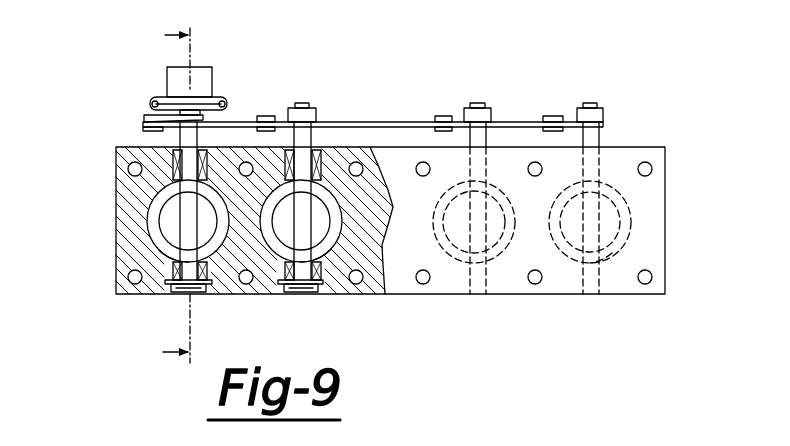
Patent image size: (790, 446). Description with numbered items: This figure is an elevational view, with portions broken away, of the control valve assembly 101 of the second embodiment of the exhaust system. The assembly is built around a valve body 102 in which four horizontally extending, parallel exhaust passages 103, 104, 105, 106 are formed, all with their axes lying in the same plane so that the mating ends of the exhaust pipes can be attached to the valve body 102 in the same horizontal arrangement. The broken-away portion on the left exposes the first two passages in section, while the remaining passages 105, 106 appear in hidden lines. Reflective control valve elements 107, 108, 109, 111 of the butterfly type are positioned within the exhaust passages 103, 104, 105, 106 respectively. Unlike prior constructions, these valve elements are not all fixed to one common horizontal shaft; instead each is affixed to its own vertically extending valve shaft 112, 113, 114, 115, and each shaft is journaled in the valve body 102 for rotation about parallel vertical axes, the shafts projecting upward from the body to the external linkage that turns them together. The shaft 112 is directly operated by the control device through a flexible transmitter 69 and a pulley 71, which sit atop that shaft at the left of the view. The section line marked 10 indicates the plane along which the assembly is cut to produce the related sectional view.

The section line 10- 10 is at (152, 191).
The pulley 71 is at (158, 97).
The flexible transmitter 69 is at (150, 103).
The control valve assembly 101 is at (667, 195).
The valve body 102 is at (118, 166).
The exhaust passage 103 is at (162, 250).
The exhaust passage 104 is at (331, 256).
The exhaust passage 105 is at (497, 248).
The exhaust passage 106 is at (615, 250).
The reflective control valve element 107 is at (157, 201).
The reflective control valve element 108 is at (330, 240).
The reflective control valve element 109 is at (455, 250).
The reflective control valve element 111 is at (565, 255).
The valve shaft 112 is at (198, 228).
The valve shaft 113 is at (312, 136).
The valve shaft 114 is at (487, 142).
The valve shaft 115 is at (600, 132).